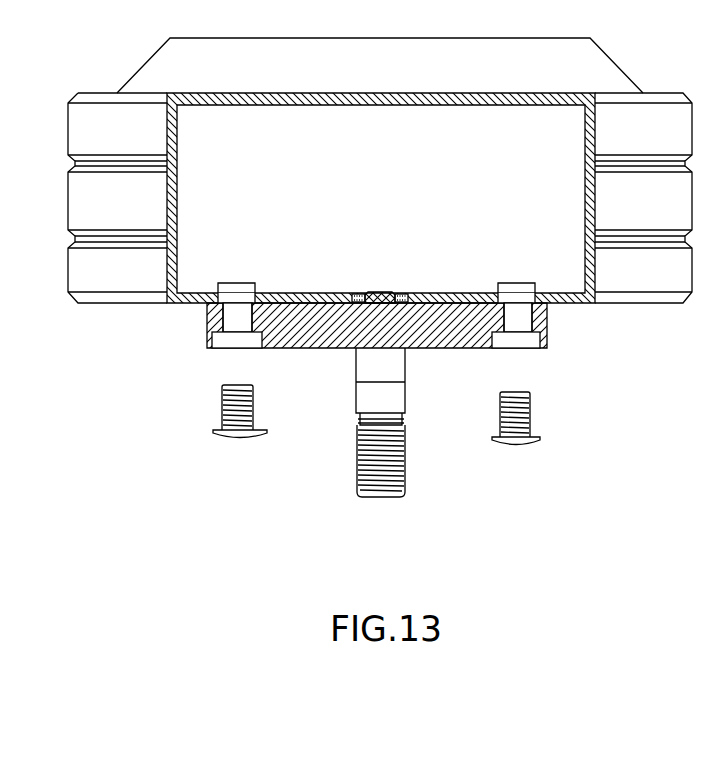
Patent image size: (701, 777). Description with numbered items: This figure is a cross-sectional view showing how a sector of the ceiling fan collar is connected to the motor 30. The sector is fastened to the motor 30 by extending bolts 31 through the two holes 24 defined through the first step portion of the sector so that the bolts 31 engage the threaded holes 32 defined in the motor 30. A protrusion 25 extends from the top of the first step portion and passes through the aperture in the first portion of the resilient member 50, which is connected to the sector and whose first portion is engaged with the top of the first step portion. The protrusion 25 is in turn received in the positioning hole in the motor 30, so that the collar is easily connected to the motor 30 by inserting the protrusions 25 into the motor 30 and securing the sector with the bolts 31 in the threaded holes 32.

The motor 30 is at (582, 305).
The holes 24 is at (522, 343).
The protrusion 25 is at (378, 293).
The resilient member 50 is at (358, 295).
The bolts 31 is at (238, 445).
The threaded holes 32 is at (514, 284).